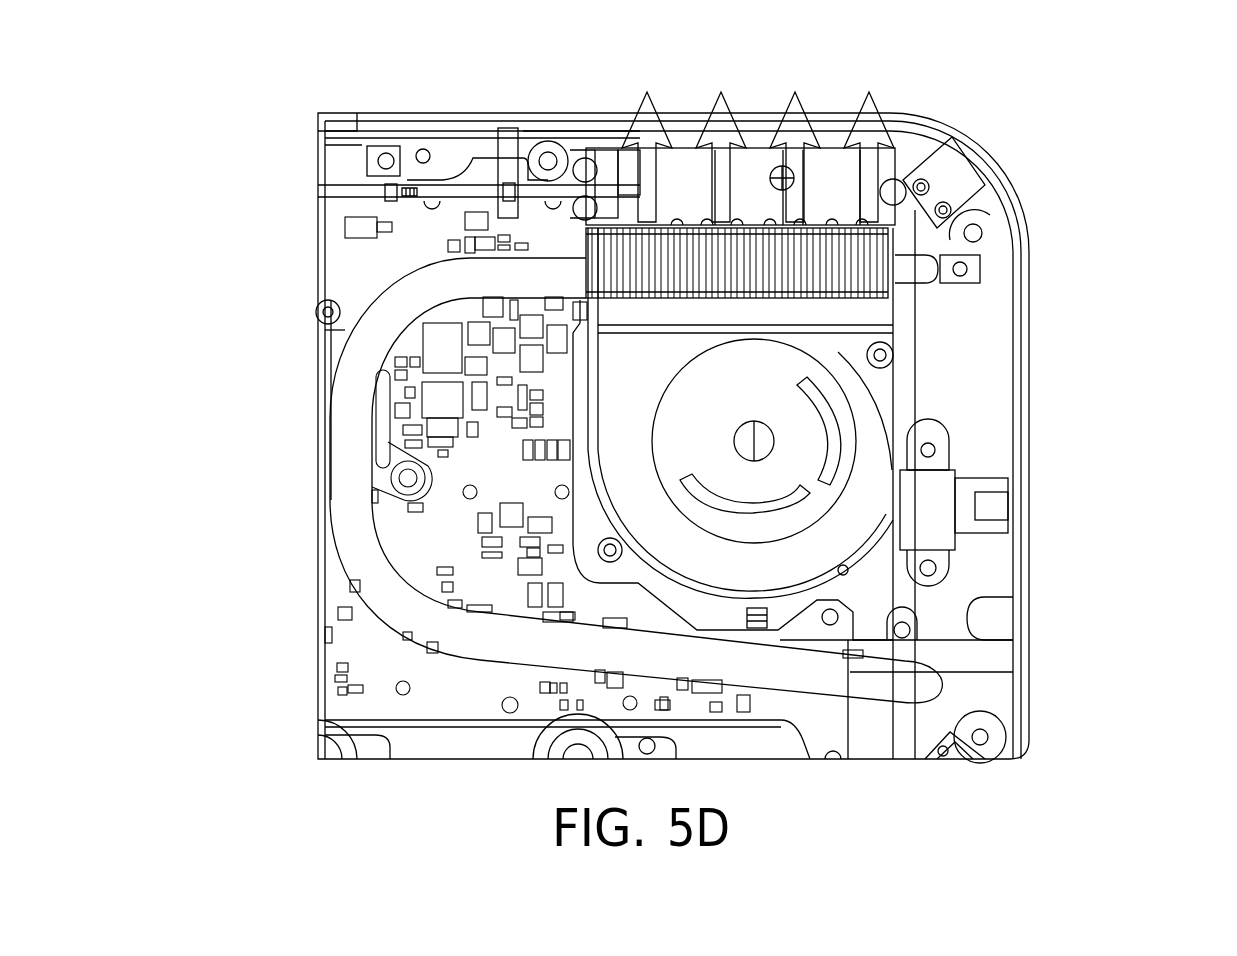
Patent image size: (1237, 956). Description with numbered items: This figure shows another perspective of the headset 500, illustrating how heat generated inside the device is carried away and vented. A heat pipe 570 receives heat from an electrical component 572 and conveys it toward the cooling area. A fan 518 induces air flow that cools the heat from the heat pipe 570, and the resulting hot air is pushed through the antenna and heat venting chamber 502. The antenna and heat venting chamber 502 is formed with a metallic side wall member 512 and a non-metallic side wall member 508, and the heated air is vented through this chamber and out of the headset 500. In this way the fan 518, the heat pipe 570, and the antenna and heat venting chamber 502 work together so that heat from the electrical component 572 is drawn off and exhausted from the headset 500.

The headset 500 is at (272, 61).
The antenna and heat venting chamber 502 is at (823, 195).
The non-metallic side wall member 508 is at (760, 119).
The metallic side wall member 512 is at (761, 275).
The fan 518 is at (795, 408).
The heat pipe 570 is at (407, 298).
The electrical component 572 is at (325, 394).